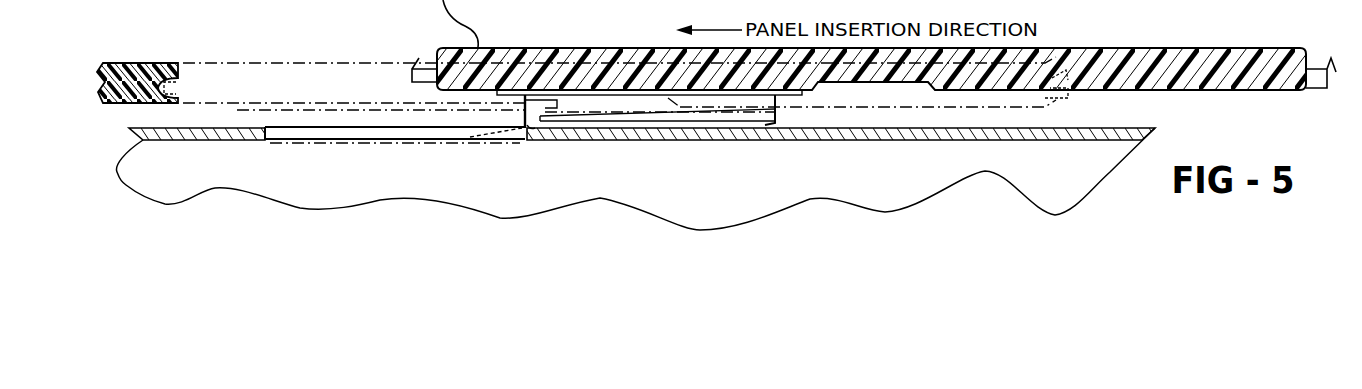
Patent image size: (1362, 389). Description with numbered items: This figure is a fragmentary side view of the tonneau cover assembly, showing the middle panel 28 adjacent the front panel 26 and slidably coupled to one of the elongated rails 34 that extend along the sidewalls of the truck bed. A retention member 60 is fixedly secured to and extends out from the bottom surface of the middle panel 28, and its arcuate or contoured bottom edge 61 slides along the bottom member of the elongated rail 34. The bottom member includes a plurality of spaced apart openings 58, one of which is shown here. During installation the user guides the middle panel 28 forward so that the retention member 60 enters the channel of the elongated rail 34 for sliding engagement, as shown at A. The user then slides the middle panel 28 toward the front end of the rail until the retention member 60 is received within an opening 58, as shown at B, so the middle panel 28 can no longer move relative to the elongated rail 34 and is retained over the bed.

The front panel 26 is at (150, 62).
The middle panel 28 is at (247, 62).
The elongated rail 34 is at (228, 128).
The opening 58 is at (523, 130).
The retention member 60 is at (285, 143).
The contoured bottom edge 61 is at (363, 142).
The sliding engagement position A is at (607, 105).
The secured position B is at (418, 122).